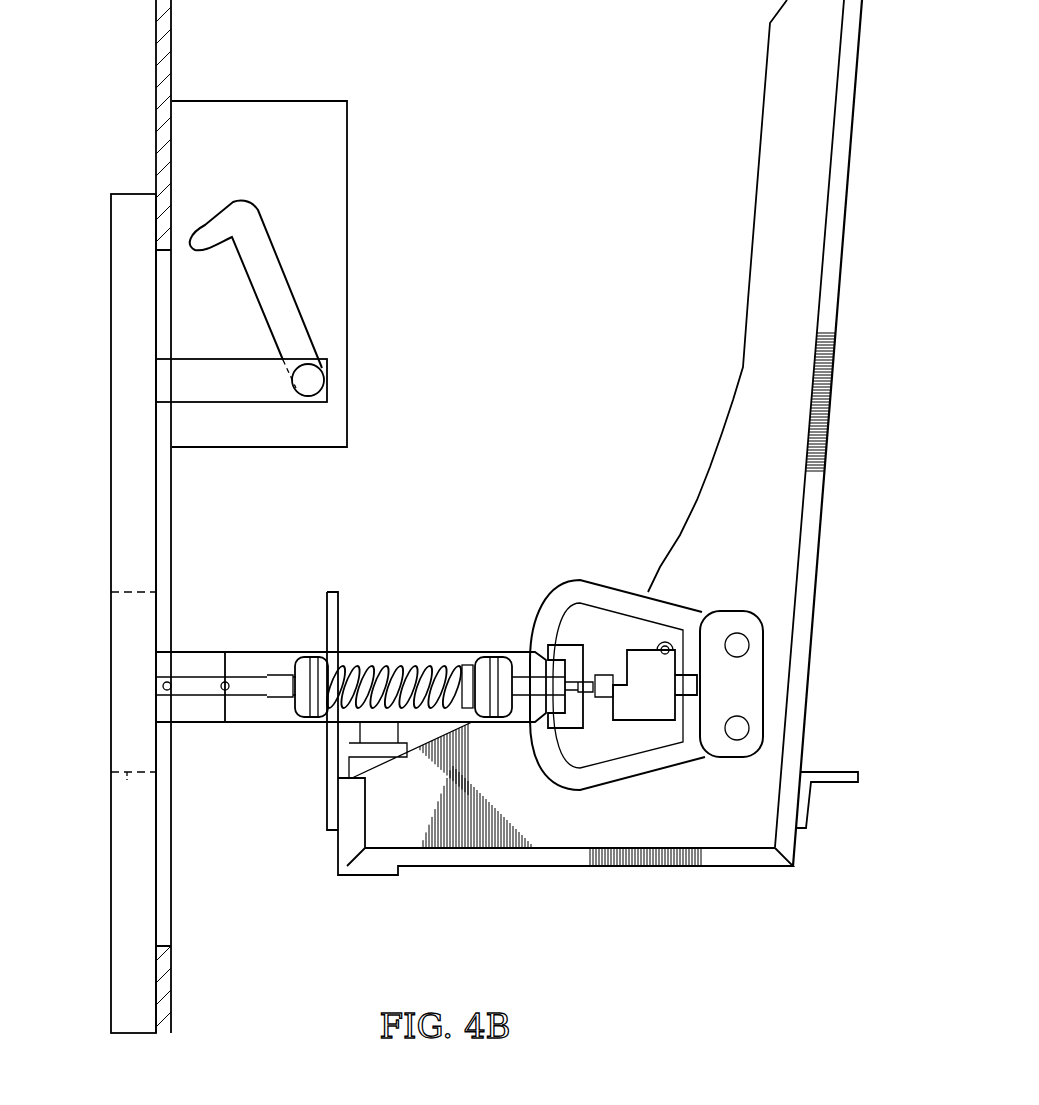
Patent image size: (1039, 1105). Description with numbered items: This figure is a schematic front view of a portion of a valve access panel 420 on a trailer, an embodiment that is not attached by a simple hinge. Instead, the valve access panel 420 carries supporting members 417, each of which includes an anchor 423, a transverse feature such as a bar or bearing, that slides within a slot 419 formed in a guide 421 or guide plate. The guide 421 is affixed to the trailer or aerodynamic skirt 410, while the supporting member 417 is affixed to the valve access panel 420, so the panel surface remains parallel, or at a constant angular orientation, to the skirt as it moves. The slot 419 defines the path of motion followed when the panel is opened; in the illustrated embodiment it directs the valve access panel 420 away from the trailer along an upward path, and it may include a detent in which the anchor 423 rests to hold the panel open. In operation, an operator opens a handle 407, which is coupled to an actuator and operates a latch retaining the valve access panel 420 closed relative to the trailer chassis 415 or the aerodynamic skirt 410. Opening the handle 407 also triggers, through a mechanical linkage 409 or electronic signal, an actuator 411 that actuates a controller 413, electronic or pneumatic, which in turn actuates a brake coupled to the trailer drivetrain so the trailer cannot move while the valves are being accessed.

The handle 407 is at (127, 773).
The mechanical linkage 409 is at (250, 697).
The aerodynamic skirt 410 is at (156, 33).
The actuator 411 is at (530, 683).
The controller 413 is at (643, 723).
The trailer chassis 415 is at (740, 867).
The supporting member 417 is at (232, 357).
The slot 419 is at (222, 222).
The valve access panel 420 is at (110, 405).
The guide 421 is at (258, 101).
The anchor 423 is at (303, 385).